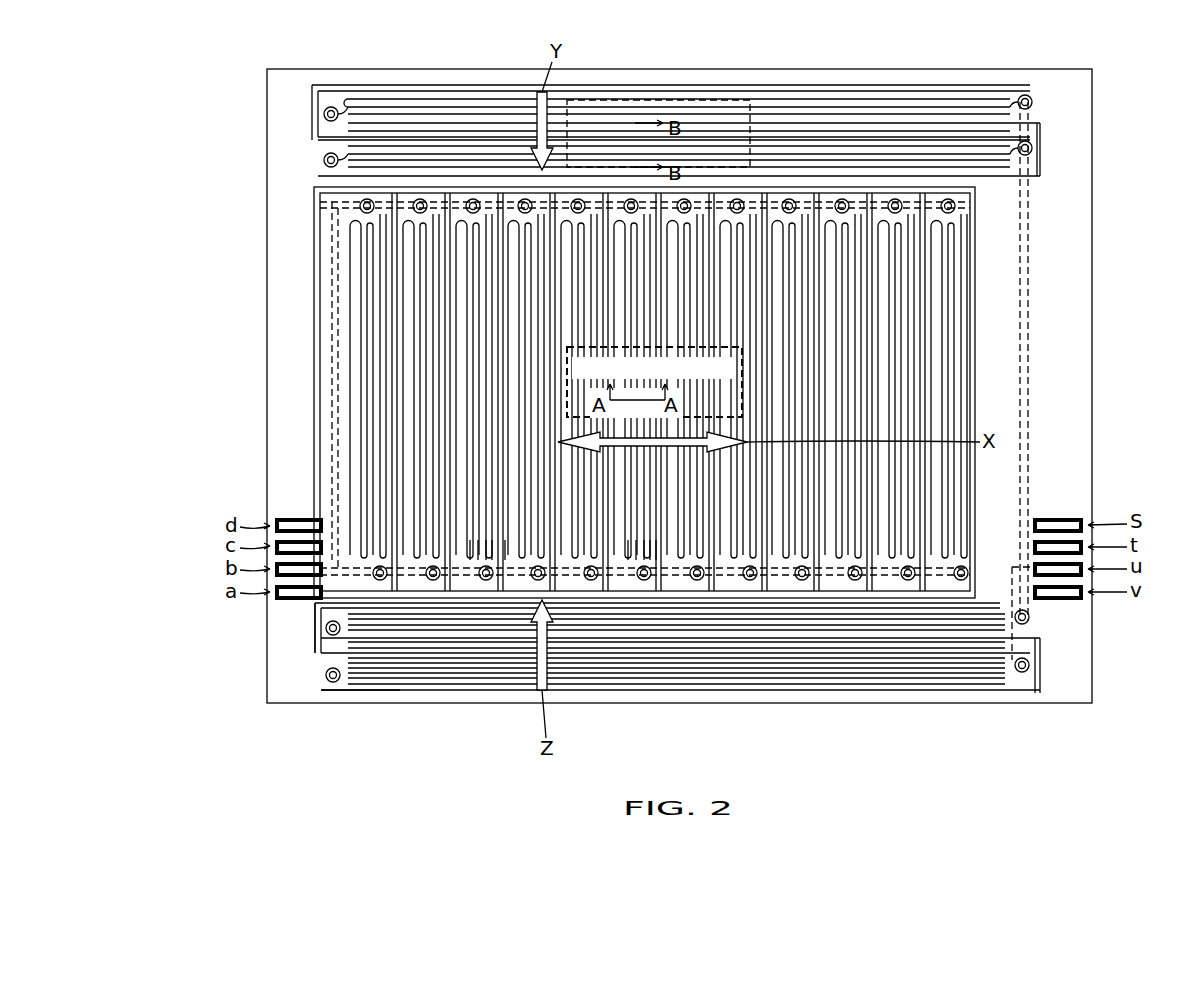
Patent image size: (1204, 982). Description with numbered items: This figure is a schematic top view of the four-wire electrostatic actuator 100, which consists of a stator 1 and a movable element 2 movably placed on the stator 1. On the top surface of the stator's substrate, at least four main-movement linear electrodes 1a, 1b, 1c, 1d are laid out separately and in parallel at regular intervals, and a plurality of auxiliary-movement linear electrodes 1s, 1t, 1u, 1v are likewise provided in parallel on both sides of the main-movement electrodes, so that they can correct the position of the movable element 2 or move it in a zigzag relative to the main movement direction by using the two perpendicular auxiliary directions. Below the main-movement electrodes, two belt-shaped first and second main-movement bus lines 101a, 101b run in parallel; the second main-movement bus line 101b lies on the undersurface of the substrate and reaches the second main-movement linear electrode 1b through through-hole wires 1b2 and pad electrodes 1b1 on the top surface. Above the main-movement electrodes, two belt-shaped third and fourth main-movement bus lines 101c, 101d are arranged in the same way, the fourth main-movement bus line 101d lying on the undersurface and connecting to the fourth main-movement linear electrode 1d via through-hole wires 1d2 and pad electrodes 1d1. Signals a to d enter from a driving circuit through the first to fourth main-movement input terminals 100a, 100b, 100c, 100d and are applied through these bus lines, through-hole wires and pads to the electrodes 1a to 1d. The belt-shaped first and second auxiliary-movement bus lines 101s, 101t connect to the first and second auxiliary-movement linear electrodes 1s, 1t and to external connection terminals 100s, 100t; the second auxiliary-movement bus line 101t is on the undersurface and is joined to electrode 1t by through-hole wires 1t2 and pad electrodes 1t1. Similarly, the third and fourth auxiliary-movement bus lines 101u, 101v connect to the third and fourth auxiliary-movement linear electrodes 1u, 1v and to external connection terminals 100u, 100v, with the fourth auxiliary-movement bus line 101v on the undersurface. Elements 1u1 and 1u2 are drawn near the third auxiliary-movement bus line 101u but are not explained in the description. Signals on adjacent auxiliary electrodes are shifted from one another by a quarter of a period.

The stator 1 is at (1092, 265).
The movable element 2 is at (742, 380).
The four-wire electrostatic actuator 100 is at (432, 780).
The first main-movement input terminal 100a is at (280, 598).
The second main-movement input terminal 100b is at (285, 577).
The third main-movement input terminal 100c is at (285, 541).
The fourth main-movement input terminal 100d is at (290, 518).
The external connection terminal 100s is at (1060, 518).
The external connection terminal 100t is at (1083, 548).
The external connection terminal 100u is at (1083, 570).
The external connection terminal 100v is at (1065, 602).
The first main-movement bus line 101a is at (322, 615).
The second main-movement bus line 101b is at (315, 680).
The third main-movement bus line 101c is at (332, 190).
The fourth main-movement bus line 101d is at (338, 208).
The first auxiliary-movement bus line 101s is at (1040, 385).
The second auxiliary-movement bus line 101t is at (1028, 320).
The third auxiliary-movement bus line 101u is at (318, 160).
The fourth auxiliary-movement bus line 101v is at (312, 113).
The first main-movement linear electrode 1a is at (462, 560).
The second main-movement linear electrode 1b is at (470, 560).
The pad electrode 1b1 is at (478, 560).
The through-hole wire 1b2 is at (486, 560).
The third main-movement linear electrode 1c is at (492, 560).
The fourth main-movement linear electrode 1d is at (505, 560).
The pad electrode 1d1 is at (478, 200).
The through-hole wire 1d2 is at (468, 200).
The first auxiliary-movement linear electrode 1s is at (700, 125).
The second auxiliary-movement linear electrode 1t is at (690, 110).
The pad electrode 1t1 is at (1032, 97).
The through-hole wire 1t2 is at (1025, 95).
The third auxiliary-movement linear electrode 1u is at (720, 135).
The via conductor u1 1u1 is at (345, 103).
The via conductor u2 1u2 is at (331, 106).
The fourth auxiliary-movement linear electrode 1v is at (727, 145).